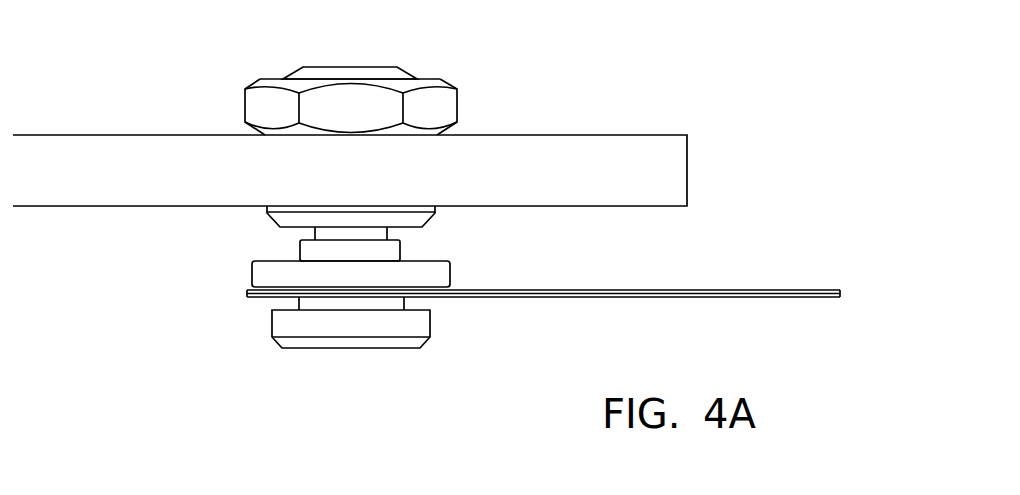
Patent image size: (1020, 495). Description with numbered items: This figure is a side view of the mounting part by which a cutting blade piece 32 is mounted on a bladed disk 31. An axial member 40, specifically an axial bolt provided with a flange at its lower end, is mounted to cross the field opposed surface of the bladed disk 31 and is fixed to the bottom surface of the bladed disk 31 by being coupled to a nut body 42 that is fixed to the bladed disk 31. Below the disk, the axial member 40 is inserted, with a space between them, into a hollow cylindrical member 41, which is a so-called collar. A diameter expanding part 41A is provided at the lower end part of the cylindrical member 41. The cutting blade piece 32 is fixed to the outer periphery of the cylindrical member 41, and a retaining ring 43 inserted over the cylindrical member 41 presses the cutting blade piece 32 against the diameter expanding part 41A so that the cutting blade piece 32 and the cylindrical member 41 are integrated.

The bladed disk 31 is at (687, 167).
The cutting blade piece 32 is at (841, 295).
The axial member 40 is at (387, 235).
The cylindrical member 41 is at (300, 250).
The diameter expanding part 41A is at (272, 308).
The nut body 42 is at (262, 207).
The retaining ring 43 is at (252, 272).